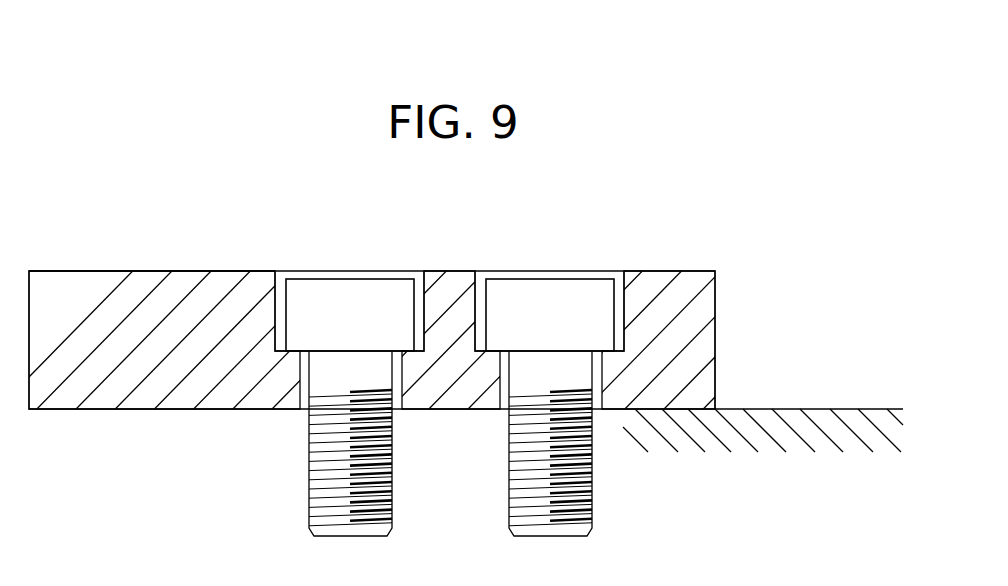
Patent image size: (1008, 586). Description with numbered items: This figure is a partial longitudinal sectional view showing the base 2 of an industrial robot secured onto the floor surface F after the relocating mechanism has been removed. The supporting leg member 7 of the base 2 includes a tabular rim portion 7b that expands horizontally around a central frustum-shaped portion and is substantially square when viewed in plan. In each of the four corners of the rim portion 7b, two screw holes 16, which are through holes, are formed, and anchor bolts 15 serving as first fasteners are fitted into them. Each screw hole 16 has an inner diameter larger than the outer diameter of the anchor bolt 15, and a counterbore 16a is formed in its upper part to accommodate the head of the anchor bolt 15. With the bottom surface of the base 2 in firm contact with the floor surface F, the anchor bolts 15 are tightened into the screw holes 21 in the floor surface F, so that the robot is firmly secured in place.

The base 2 is at (174, 149).
The supporting leg member 7 is at (205, 271).
The rim portion 7b is at (124, 271).
The anchor bolt 15 is at (313, 279).
The screw hole 16 is at (391, 378).
The counterbore 16a is at (423, 312).
The screw hole in the floor surface 21 is at (308, 440).
The floor surface F is at (836, 409).